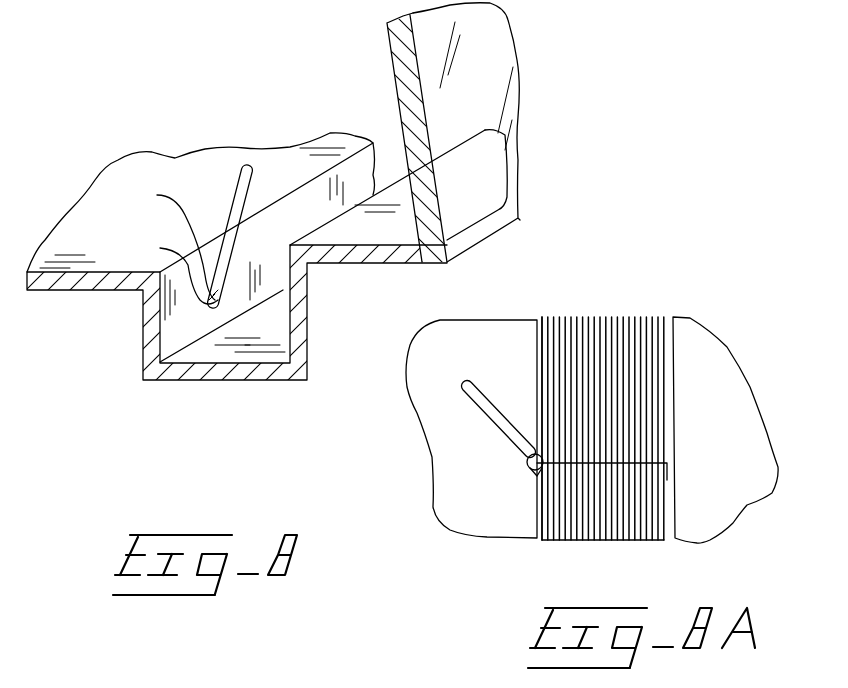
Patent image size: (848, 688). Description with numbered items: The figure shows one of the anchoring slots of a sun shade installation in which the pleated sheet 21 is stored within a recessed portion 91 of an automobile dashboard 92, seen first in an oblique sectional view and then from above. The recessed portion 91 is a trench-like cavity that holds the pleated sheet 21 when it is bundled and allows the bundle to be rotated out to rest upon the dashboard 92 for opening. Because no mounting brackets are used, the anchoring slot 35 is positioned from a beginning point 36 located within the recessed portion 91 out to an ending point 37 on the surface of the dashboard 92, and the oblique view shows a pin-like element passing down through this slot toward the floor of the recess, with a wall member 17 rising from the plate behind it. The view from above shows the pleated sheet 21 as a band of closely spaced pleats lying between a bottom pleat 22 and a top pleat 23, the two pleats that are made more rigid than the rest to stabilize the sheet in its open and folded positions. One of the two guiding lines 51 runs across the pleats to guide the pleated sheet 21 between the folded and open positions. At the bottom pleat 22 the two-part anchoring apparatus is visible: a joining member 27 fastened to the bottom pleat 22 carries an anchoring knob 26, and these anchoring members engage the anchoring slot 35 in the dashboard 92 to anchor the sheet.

In FIG. 8, the wall member 17 is at (500, 53).
In FIG. 8A, the pleated sheet 21 is at (665, 293).
In FIG. 8A, the bottom pleat 22 is at (543, 338).
In FIG. 8A, the top pleat 23 is at (665, 405).
In FIG. 8A, the anchoring knob 26 is at (522, 458).
In FIG. 8A, the joining member 27 is at (535, 478).
In FIG. 8, the anchoring slot 35 is at (157, 195).
In FIG. 8, the beginning point 36 is at (160, 248).
In FIG. 8, the ending point 37 is at (248, 162).
In FIG. 8A, the ending point 37 is at (466, 376).
In FIG. 8A, the guiding line 51 is at (669, 478).
In FIG. 8, the recessed portion 91 is at (287, 390).
In FIG. 8A, the recessed portion 91 is at (673, 548).
In FIG. 8, the dashboard 92 is at (100, 222).
In FIG. 8A, the dashboard 92 is at (423, 412).